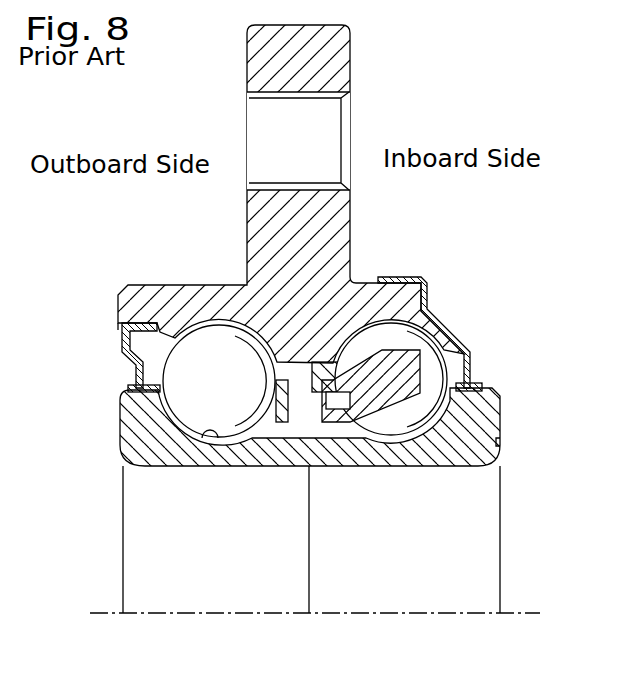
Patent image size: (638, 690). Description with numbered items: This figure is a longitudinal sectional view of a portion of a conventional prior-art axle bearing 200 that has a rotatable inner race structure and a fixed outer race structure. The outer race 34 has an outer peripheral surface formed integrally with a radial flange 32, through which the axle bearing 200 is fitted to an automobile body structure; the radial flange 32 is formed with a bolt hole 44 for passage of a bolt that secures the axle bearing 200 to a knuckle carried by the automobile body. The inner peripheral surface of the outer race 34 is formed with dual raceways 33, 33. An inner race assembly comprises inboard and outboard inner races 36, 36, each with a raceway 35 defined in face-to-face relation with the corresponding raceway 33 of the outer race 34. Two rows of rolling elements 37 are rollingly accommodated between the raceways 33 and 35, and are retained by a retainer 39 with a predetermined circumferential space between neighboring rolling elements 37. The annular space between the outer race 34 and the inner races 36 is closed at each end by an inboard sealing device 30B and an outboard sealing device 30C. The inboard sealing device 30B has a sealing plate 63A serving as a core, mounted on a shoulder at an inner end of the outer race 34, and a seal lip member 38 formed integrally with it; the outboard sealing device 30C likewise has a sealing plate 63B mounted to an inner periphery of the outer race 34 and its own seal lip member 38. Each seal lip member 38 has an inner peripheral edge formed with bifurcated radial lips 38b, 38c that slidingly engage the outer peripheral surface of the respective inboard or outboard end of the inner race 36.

The radial flange 32 is at (256, 65).
The bolt hole 44 is at (265, 147).
The outer race 34 is at (247, 282).
The raceway 33 is at (187, 335).
The sealing plate 63A is at (432, 284).
The sealing plate 63B is at (121, 331).
The inboard sealing device 30B is at (466, 311).
The outboard sealing device 30C is at (101, 351).
The seal lip member 38 is at (133, 370).
The radial lip 38b is at (123, 397).
The radial lip 38c is at (150, 390).
The raceway 35 is at (223, 438).
The inner race 36 is at (250, 455).
The rolling element 37 is at (195, 410).
The retainer 39 is at (357, 425).
The axle bearing 200 is at (298, 482).